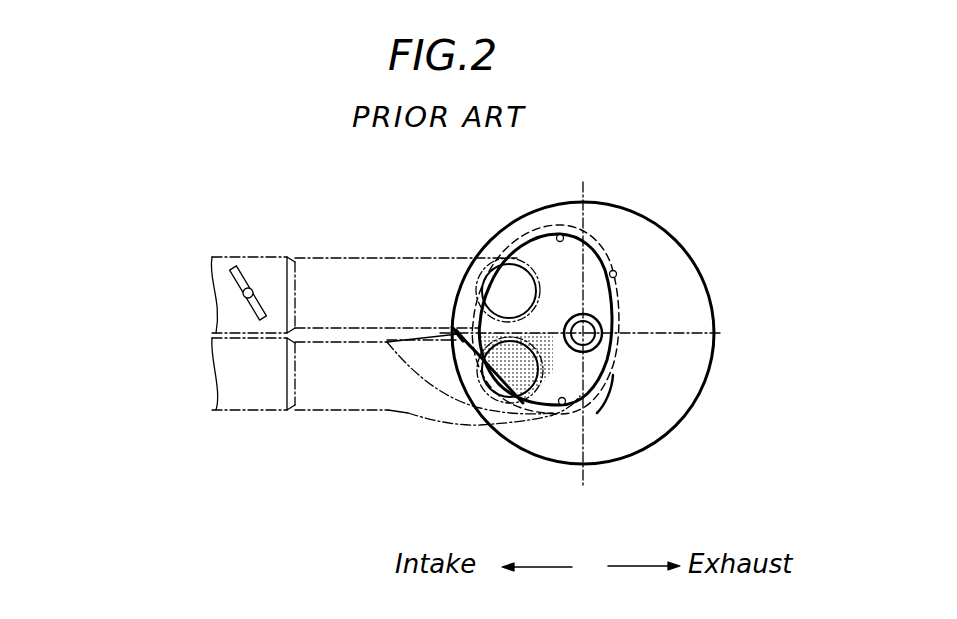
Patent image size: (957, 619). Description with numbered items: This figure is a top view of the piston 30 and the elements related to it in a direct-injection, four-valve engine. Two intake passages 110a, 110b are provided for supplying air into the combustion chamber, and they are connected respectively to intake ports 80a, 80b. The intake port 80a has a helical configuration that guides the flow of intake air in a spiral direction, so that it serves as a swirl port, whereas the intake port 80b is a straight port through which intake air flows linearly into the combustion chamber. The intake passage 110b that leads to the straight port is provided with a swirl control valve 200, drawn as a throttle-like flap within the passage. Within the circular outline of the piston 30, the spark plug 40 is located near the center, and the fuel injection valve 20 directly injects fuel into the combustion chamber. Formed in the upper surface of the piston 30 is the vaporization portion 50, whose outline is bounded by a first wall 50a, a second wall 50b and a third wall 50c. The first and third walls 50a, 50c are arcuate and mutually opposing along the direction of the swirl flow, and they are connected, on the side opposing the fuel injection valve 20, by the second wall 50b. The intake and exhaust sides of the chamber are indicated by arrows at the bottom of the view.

The fuel injection valve 20 is at (423, 333).
The piston 30 is at (680, 420).
The spark plug 40 is at (590, 343).
The vaporization portion 50 is at (517, 285).
The first wall 50a is at (563, 404).
The second wall 50b is at (616, 273).
The third wall 50c is at (561, 236).
The intake port 80a is at (433, 425).
The intake port 80b is at (373, 258).
The intake passage 110a is at (240, 413).
The intake passage 110b is at (267, 257).
The swirl control valve 200 is at (235, 267).